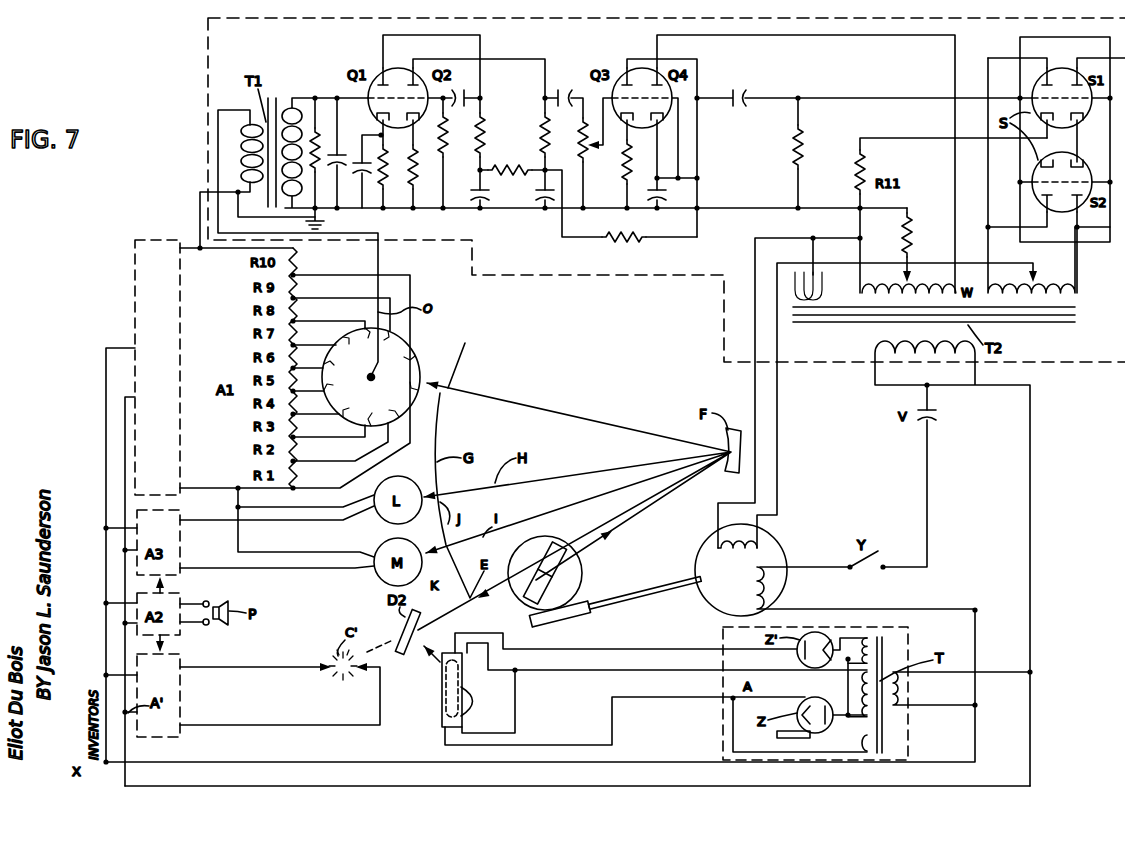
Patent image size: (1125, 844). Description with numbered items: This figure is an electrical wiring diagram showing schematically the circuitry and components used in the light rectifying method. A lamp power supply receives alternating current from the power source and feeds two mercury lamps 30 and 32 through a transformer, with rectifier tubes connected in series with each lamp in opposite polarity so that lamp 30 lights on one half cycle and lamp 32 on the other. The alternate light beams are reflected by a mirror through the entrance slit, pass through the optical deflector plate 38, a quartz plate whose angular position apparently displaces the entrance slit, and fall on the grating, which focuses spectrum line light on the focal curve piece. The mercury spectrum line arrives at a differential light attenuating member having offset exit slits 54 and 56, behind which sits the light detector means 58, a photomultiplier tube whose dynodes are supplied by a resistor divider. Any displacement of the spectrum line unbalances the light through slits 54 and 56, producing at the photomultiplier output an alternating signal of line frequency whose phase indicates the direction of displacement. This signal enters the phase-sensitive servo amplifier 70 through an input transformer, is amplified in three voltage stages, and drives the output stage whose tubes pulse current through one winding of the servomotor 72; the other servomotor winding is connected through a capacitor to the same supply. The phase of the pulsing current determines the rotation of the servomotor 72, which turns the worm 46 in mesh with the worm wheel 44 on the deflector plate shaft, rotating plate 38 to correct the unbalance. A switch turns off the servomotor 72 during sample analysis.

The phase-sensitive servo amplifier 70 is at (238, 157).
The light detector means 58 is at (416, 358).
The offset exit slit 54 is at (456, 386).
The offset exit slit 56 is at (447, 393).
The optical deflector plate 38 is at (556, 556).
The worm wheel 44 is at (585, 577).
The worm 46 is at (615, 606).
The servomotor 72 is at (770, 552).
The mercury lamp 30 is at (444, 688).
The mercury lamp 32 is at (469, 690).